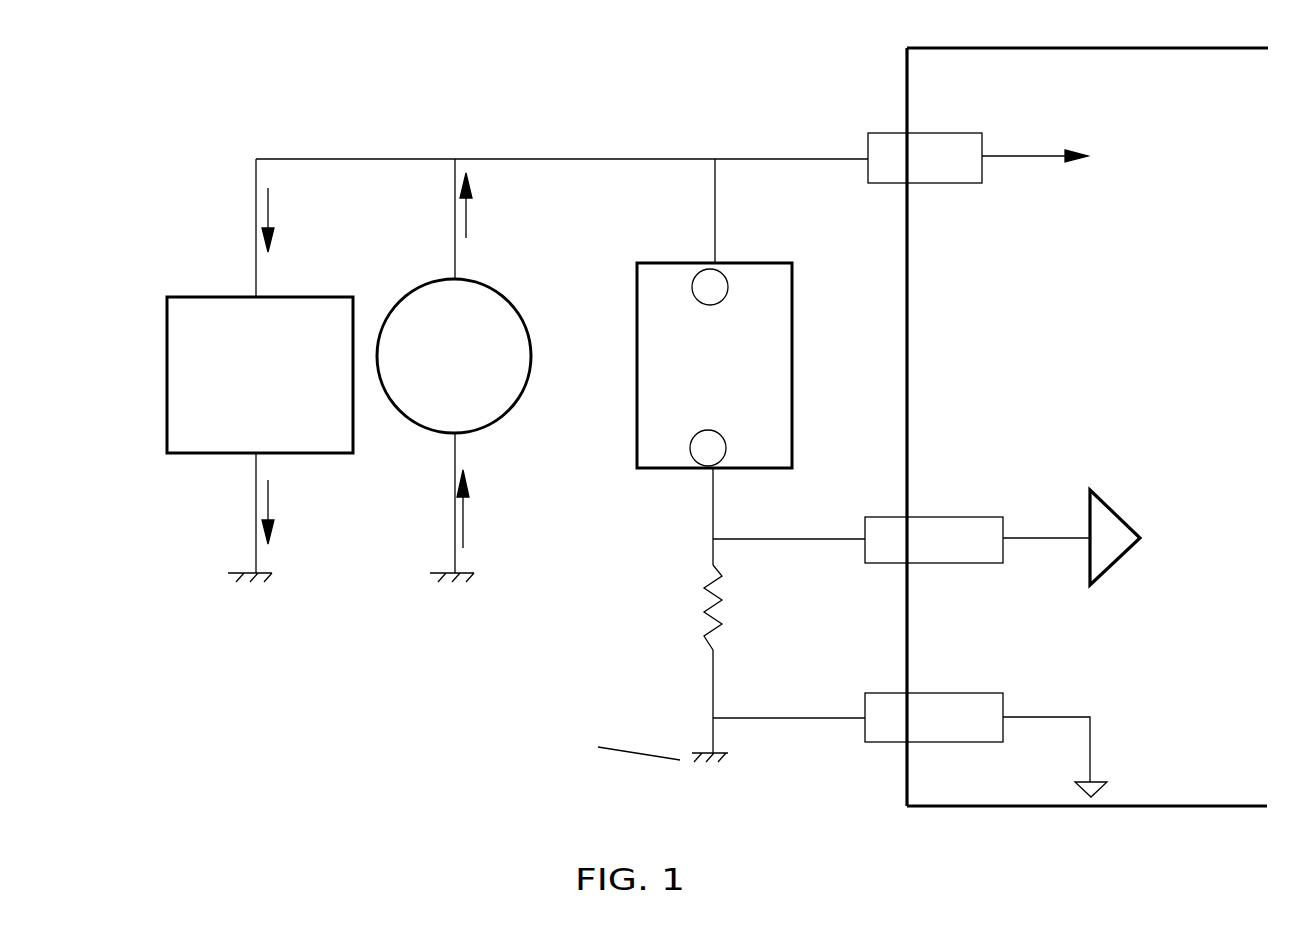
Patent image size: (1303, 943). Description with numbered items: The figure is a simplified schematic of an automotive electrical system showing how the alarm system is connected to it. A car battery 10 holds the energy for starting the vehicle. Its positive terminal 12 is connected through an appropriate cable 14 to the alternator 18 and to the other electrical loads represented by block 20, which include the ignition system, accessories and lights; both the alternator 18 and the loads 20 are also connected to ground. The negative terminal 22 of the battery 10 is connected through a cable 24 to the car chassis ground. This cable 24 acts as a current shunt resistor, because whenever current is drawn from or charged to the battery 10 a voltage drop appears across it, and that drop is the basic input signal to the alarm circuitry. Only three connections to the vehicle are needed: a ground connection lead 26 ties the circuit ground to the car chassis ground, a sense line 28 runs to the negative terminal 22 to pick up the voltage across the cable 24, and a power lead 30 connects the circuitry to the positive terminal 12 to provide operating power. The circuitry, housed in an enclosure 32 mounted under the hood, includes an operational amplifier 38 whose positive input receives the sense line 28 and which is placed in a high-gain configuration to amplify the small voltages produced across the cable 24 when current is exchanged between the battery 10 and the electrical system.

The car battery 10 is at (792, 372).
The positive terminal 12 is at (728, 267).
The cable 14 is at (715, 226).
The alternator 18 is at (503, 413).
The electrical loads 20 is at (191, 453).
The negative terminal 22 is at (723, 462).
The cable 24 is at (717, 608).
The ground connection lead 26 is at (777, 720).
The sense line 28 is at (775, 543).
The power lead 30 is at (788, 157).
The enclosure 32 is at (1073, 809).
The operational amplifier 38 is at (1130, 555).